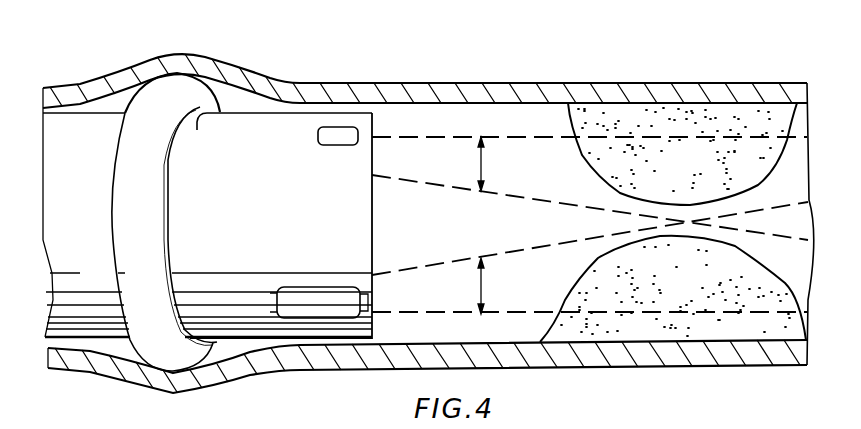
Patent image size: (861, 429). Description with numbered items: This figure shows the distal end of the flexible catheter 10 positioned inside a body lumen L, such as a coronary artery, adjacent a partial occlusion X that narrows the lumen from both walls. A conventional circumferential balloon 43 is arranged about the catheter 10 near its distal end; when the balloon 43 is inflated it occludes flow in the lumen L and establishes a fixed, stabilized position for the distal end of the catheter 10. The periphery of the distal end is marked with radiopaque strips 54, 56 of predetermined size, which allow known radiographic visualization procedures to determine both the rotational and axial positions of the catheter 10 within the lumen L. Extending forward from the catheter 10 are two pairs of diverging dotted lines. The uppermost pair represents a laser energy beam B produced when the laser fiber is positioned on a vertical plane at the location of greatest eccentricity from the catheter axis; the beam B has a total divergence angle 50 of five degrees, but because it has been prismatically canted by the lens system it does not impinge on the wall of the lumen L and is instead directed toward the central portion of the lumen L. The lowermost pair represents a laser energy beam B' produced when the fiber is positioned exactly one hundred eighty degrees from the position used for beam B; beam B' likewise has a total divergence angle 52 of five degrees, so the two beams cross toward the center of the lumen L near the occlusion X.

The catheter 10 is at (248, 222).
The circumferential balloon 43 is at (148, 256).
The radiopaque strip 54 is at (327, 147).
The radiopaque strip 56 is at (308, 295).
The total divergence angle 50 is at (482, 163).
The total divergence angle 52 is at (482, 283).
The lumen L is at (277, 83).
The laser energy beam B is at (590, 188).
The laser energy beam B' is at (590, 257).
The partial occlusion X is at (689, 169).